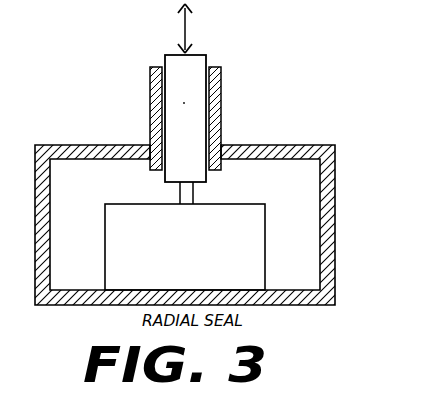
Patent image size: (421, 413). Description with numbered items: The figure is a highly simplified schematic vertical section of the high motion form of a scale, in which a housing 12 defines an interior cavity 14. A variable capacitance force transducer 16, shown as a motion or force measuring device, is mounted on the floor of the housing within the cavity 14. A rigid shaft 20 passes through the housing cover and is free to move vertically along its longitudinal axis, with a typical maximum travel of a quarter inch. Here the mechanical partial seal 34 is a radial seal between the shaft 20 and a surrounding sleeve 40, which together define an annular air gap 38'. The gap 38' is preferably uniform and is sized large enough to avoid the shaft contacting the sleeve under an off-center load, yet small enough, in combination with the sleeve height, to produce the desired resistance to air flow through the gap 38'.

The housing 12 is at (336, 218).
The interior cavity 14 is at (303, 214).
The variable capacitance force transducer 16 is at (104, 232).
The rigid shaft 20 is at (206, 179).
The mechanical partial seal 34 is at (148, 119).
The annular air gap 38' is at (231, 93).
The sleeve 40 is at (222, 110).